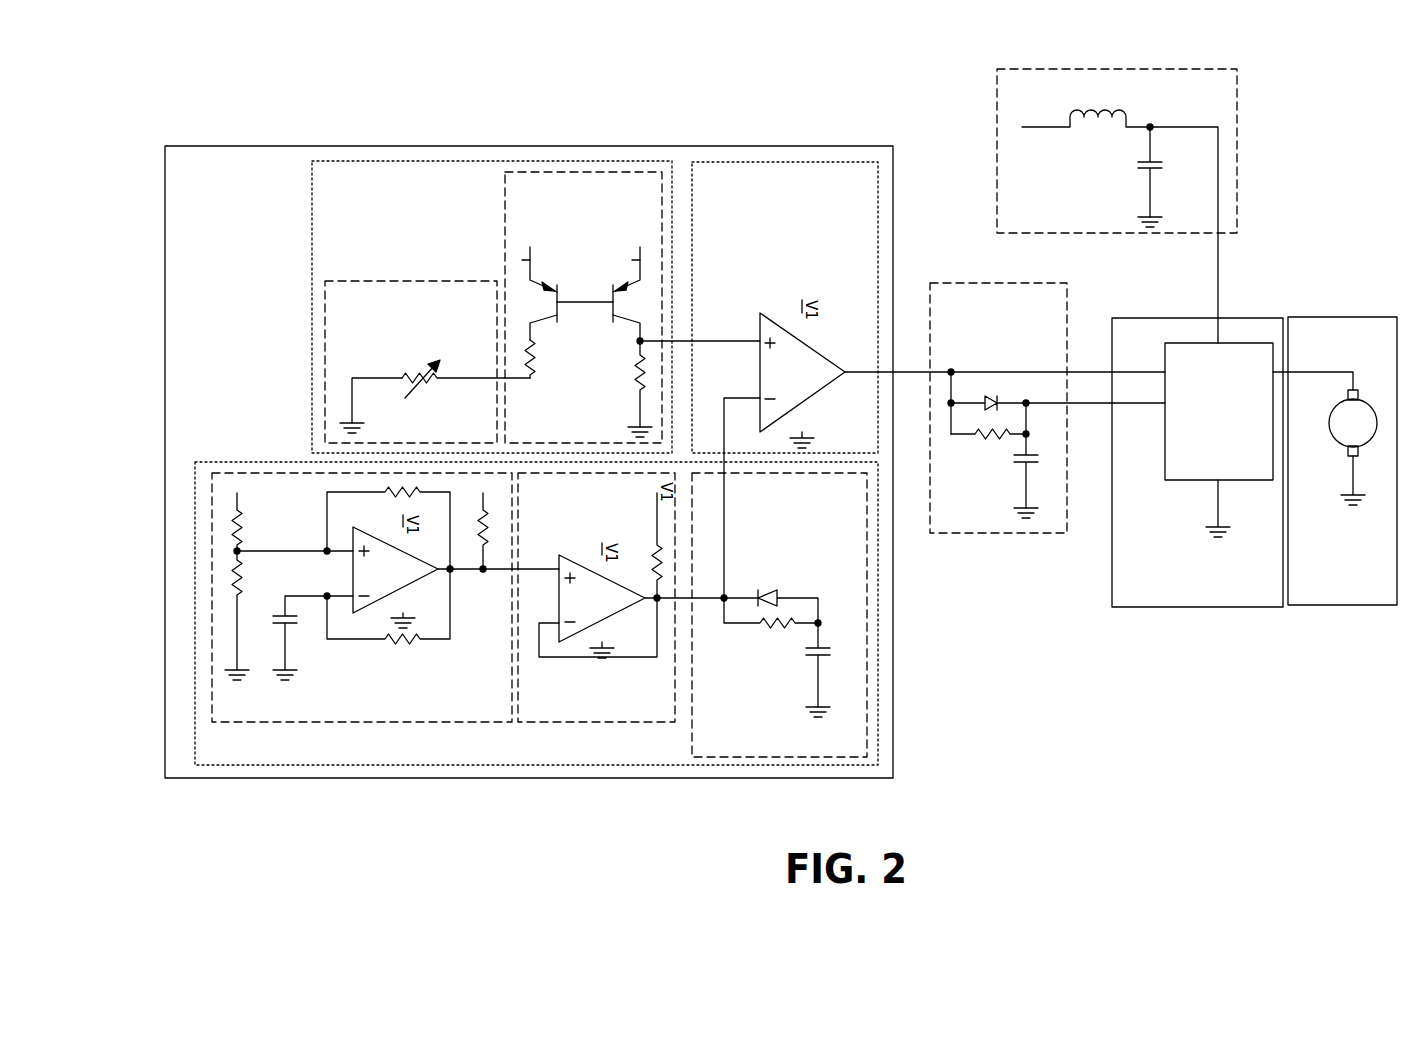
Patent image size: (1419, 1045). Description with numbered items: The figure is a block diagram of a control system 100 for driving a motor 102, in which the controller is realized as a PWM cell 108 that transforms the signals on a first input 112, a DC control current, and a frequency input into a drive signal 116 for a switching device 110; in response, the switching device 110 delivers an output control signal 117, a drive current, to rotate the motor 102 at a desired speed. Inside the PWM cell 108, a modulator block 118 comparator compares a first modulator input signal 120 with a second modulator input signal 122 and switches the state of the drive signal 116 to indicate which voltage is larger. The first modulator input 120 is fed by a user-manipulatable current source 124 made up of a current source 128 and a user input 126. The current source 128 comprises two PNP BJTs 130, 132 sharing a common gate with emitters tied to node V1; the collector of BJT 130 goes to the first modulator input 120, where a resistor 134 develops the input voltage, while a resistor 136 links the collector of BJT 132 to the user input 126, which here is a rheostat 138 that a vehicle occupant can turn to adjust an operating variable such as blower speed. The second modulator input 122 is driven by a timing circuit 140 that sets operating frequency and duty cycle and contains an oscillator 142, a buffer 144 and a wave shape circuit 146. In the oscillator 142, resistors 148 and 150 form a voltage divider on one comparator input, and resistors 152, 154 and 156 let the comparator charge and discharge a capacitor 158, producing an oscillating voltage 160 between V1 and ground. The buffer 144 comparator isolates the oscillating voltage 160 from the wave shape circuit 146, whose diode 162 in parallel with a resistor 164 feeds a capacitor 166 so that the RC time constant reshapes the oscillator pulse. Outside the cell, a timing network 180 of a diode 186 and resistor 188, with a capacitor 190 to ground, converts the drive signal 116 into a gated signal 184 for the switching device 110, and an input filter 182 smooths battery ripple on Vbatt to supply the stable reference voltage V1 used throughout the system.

The control system 100 is at (355, 52).
The motor 102 is at (1342, 610).
The PWM cell 108 is at (228, 146).
The switching device 110 is at (1185, 610).
The first input signal 112 is at (492, 392).
The drive signal 116 is at (900, 371).
The output control signal 117 is at (1305, 370).
The modulator block 118 is at (776, 152).
The first modulator input signal 120 is at (741, 340).
The second modulator input signal 122 is at (745, 397).
The user-manipulatable current source 124 is at (494, 152).
The user input 126 is at (418, 270).
The current source 128 is at (503, 232).
The PNP BJT 130 is at (627, 274).
The PNP BJT 132 is at (533, 272).
The resistor 134 is at (627, 369).
The resistor 136 is at (542, 349).
The rheostat 138 is at (418, 364).
The timing circuit 140 is at (481, 773).
The oscillator 142 is at (391, 731).
The buffer 144 is at (581, 731).
The wave shape circuit 146 is at (798, 766).
The resistor 148 is at (230, 522).
The resistor 150 is at (230, 575).
The resistor 152 is at (395, 500).
The resistor 154 is at (395, 650).
The resistor 156 is at (500, 527).
The capacitor 158 is at (284, 598).
The oscillating voltage 160 is at (505, 586).
The diode 162 is at (773, 589).
The resistor 164 is at (766, 630).
The capacitor 166 is at (826, 648).
The timing network 180 is at (1013, 543).
The input filter 182 is at (1117, 241).
The gated signal 184 is at (1088, 405).
The diode 186 is at (990, 386).
The resistor 188 is at (1001, 449).
The capacitor 190 is at (1036, 462).